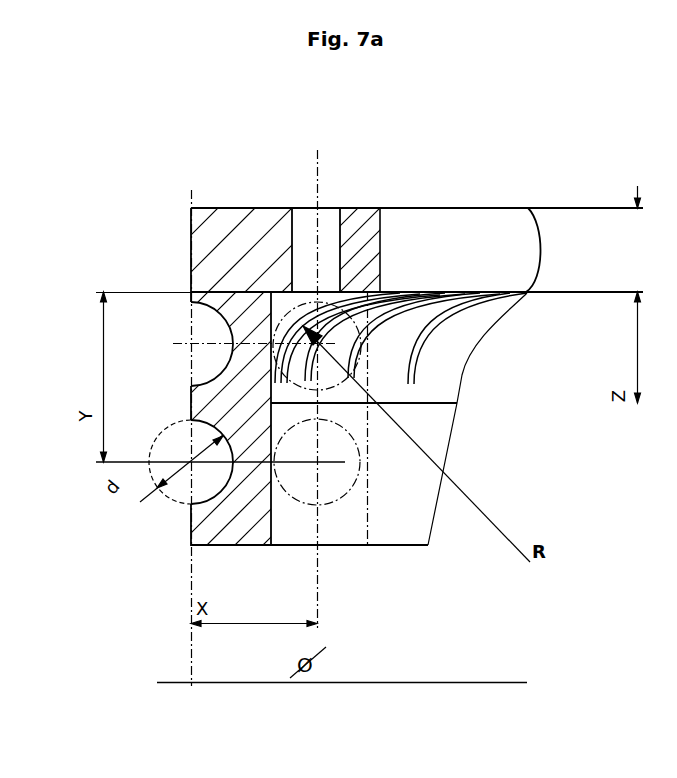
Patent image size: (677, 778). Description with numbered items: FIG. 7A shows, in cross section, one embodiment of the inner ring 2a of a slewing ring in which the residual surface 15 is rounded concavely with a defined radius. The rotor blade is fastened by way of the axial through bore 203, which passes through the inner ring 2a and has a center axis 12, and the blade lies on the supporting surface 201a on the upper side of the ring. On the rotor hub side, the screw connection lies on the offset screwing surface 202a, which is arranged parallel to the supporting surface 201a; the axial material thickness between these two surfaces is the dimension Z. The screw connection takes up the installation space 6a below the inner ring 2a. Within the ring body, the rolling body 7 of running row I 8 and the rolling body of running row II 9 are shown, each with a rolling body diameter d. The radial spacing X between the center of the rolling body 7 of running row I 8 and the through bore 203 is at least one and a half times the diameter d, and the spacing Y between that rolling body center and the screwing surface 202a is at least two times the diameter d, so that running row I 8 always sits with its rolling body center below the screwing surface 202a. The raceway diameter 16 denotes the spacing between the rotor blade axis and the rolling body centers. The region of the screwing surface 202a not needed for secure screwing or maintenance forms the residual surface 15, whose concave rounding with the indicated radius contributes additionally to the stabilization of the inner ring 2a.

The inner ring 2a is at (495, 226).
The supporting surface 201a is at (373, 207).
The screwing surface 202a is at (305, 323).
The axial through bore 203 is at (298, 292).
The center axis 12 is at (317, 207).
The residual surface 15 is at (478, 317).
The raceway diameter 16 is at (342, 670).
The installation space 6a is at (428, 541).
The rolling body 7 is at (203, 470).
The running row I 8 is at (186, 451).
The running row II 9 is at (173, 343).